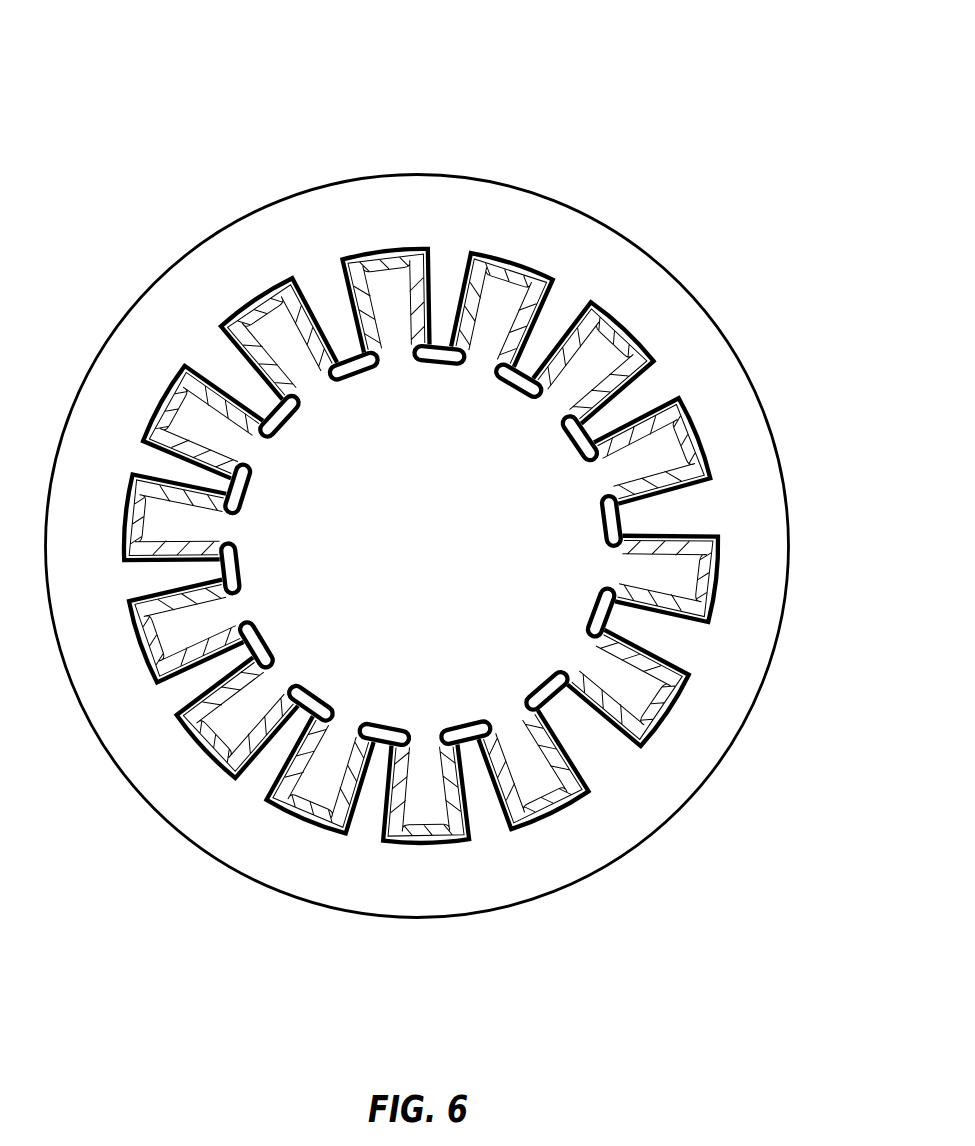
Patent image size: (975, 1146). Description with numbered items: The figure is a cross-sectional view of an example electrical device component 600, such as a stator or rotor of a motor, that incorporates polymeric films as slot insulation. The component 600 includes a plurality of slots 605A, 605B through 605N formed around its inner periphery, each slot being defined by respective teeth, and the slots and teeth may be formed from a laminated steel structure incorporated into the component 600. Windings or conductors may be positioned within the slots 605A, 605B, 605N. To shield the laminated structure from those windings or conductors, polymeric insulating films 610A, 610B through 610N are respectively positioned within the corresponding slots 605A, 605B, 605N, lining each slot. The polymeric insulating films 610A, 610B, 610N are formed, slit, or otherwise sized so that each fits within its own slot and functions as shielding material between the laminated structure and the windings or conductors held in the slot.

The electrical device component 600 is at (455, 464).
The slot 605A is at (575, 280).
The slot 605B is at (718, 423).
The slot 605N is at (400, 226).
The polymeric insulating film 610A is at (485, 245).
The polymeric insulating film 610B is at (710, 474).
The polymeric insulating film 610N is at (258, 280).